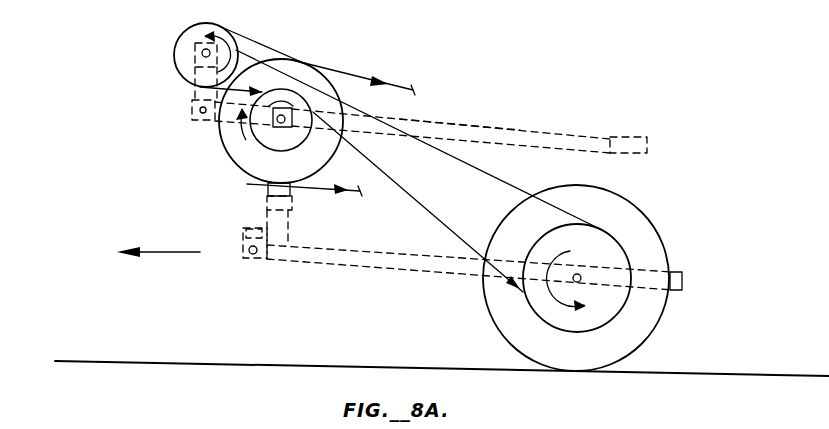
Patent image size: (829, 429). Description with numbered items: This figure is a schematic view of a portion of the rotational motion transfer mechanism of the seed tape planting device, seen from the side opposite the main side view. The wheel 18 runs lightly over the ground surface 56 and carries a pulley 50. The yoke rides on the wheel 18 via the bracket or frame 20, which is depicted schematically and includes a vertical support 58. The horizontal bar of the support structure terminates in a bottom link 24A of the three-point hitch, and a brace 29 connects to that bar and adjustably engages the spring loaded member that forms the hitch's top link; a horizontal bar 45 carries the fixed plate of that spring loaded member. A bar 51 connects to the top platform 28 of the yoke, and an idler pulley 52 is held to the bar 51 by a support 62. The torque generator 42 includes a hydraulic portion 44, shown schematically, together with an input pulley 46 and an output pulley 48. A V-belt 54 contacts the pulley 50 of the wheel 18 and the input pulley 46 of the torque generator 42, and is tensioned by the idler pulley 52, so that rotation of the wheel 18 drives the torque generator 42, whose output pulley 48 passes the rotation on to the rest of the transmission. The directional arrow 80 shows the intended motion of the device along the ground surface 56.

The wheel 18 is at (653, 236).
The bracket or frame 20 is at (684, 285).
The bottom link 24A is at (248, 259).
The top platform 28 is at (627, 137).
The brace 29 is at (243, 240).
The torque generator 42 is at (308, 64).
The hydraulic portion 44 is at (272, 128).
The horizontal bar 45 is at (293, 205).
The input pulley 46 is at (364, 153).
The output pulley 48 is at (235, 146).
The pulley 50 is at (595, 250).
The bar 51 is at (518, 129).
The idler pulley 52 is at (188, 36).
The V-belt 54 is at (490, 176).
The ground surface 56 is at (128, 362).
The vertical support 58 is at (291, 233).
The support 62 is at (188, 76).
The directional arrow 80 is at (157, 251).